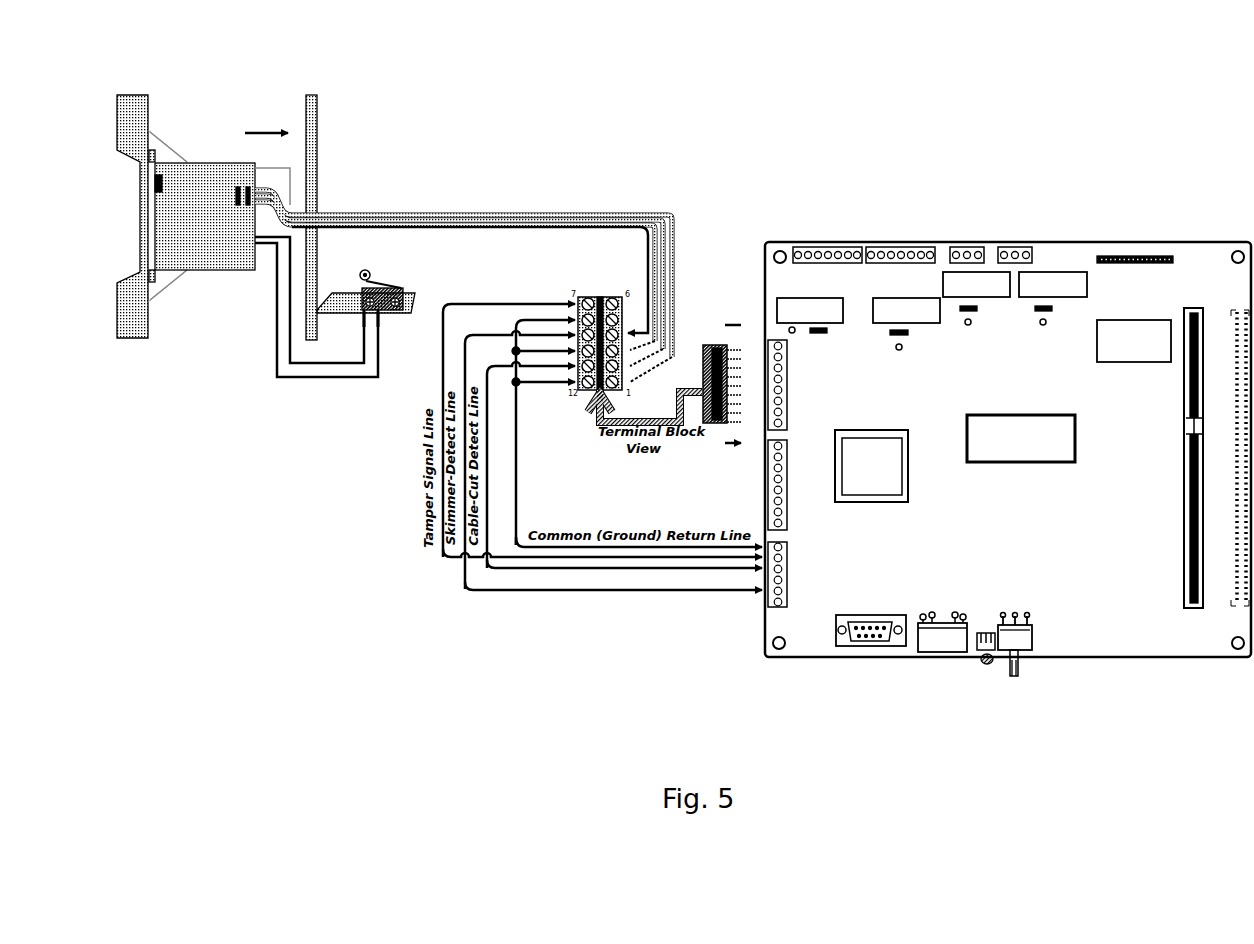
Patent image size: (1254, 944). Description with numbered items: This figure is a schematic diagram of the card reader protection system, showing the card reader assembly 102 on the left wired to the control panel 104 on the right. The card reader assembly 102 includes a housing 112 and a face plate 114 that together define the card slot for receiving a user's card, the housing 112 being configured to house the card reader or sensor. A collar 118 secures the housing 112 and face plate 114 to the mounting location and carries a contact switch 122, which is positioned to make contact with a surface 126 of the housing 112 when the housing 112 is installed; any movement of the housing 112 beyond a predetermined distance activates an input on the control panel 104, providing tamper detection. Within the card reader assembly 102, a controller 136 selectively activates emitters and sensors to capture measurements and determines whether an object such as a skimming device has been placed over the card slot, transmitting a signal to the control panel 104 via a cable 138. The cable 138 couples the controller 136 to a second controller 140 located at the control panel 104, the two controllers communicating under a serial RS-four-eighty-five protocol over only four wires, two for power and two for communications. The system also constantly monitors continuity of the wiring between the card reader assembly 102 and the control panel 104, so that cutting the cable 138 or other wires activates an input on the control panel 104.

The card reader assembly 102 is at (417, 418).
The control panel 104 is at (765, 630).
The housing 112 is at (198, 270).
The face plate 114 is at (132, 108).
The collar 118 is at (309, 93).
The contact switch 122 is at (415, 292).
The surface 126 is at (216, 282).
The controller 136 is at (200, 178).
The cable 138 is at (413, 198).
The second controller 140 is at (703, 345).